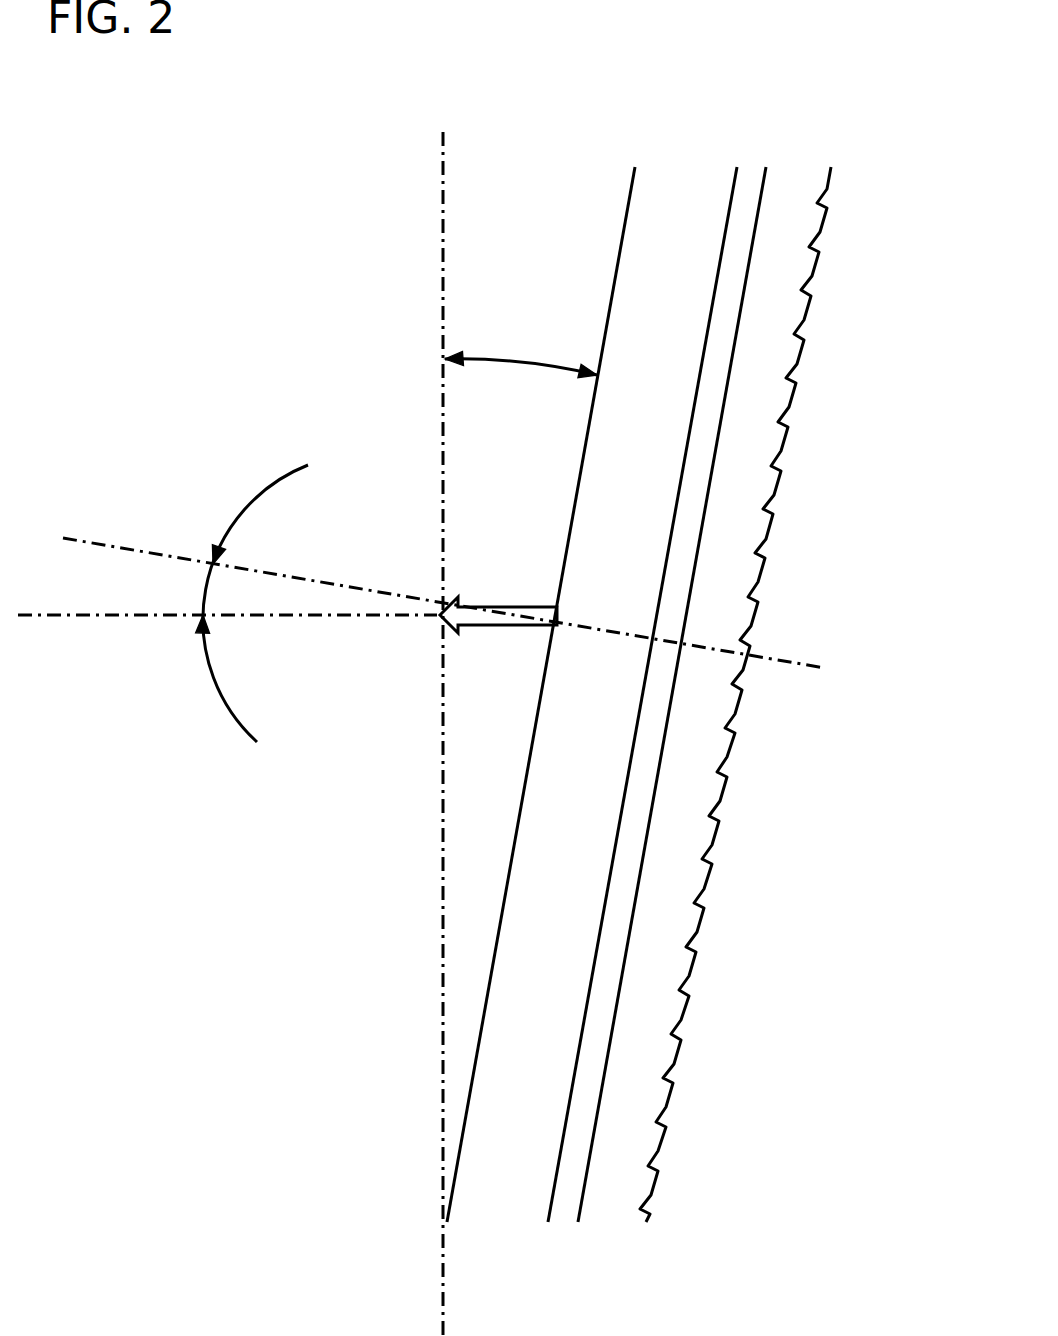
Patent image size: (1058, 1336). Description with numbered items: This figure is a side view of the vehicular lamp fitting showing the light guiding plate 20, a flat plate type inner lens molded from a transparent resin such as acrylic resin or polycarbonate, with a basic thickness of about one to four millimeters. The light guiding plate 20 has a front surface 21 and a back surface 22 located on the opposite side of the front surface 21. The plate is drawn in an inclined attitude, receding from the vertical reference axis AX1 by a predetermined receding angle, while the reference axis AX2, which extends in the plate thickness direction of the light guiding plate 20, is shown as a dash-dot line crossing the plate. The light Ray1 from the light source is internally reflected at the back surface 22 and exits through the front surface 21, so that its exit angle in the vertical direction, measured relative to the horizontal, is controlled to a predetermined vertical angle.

The light guiding plate 20 is at (714, 128).
The front surface 21 is at (464, 513).
The back surface 22 is at (842, 500).
The reference axis AX1 is at (447, 143).
The reference axis AX2 is at (90, 541).
The light Ray Ray1 is at (442, 621).